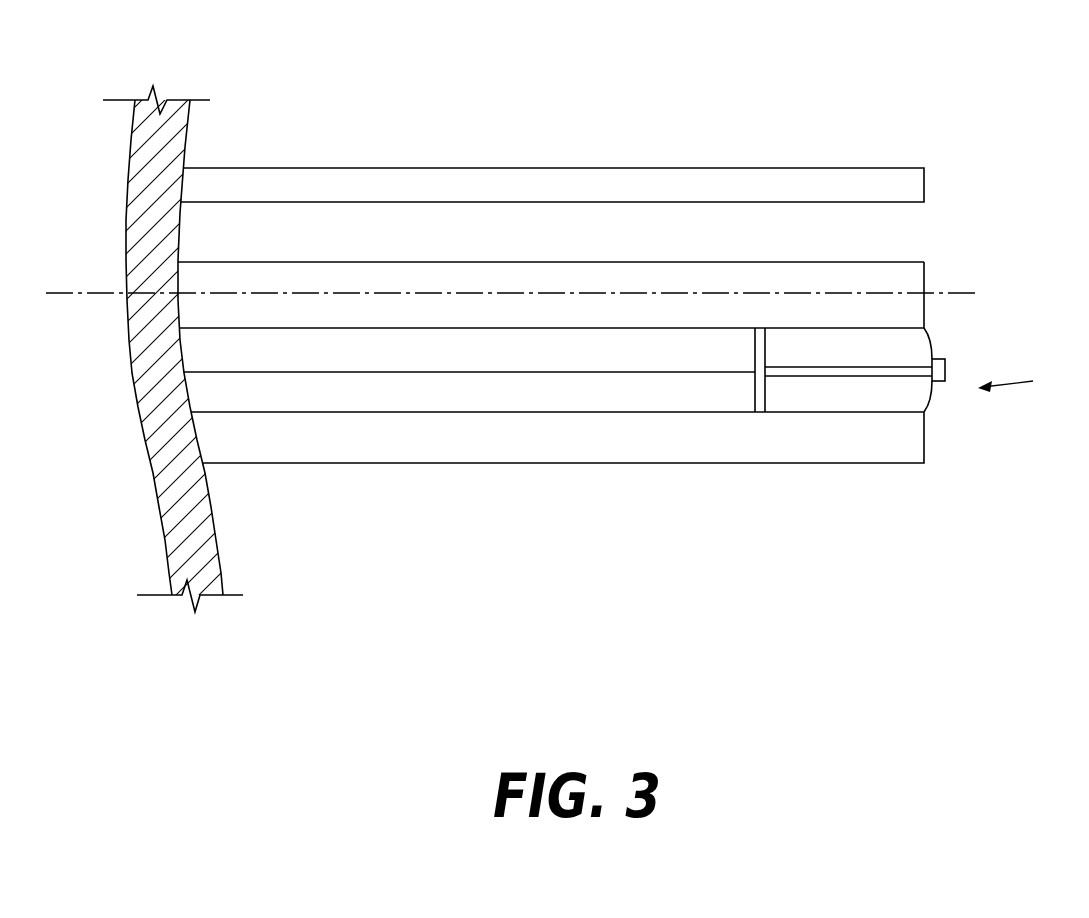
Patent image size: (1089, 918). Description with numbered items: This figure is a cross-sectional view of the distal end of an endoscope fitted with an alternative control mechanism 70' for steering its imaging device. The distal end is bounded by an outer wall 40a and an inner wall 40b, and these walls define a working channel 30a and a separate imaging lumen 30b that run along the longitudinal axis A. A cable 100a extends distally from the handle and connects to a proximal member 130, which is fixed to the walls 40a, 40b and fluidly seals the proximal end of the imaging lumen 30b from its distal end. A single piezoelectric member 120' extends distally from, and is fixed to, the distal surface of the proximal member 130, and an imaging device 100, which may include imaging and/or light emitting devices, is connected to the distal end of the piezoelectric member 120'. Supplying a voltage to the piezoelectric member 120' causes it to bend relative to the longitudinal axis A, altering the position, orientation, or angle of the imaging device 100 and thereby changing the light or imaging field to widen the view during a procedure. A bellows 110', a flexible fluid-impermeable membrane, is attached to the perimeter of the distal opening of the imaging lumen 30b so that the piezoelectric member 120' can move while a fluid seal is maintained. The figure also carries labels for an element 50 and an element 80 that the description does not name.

The optical probe assembly 50 is at (593, 113).
The working channel 30a is at (424, 220).
The imaging lumen 30b is at (400, 388).
The outer wall 40a is at (657, 183).
The inner wall 40b is at (530, 300).
The annular gap 80 is at (910, 239).
The imaging device 100 is at (945, 365).
The cable 100a is at (318, 372).
The bellows 110' is at (989, 368).
The piezoelectric member 120' is at (848, 456).
The proximal member 130 is at (760, 395).
The control mechanism 70' is at (1020, 380).
The longitudinal axis A is at (963, 293).